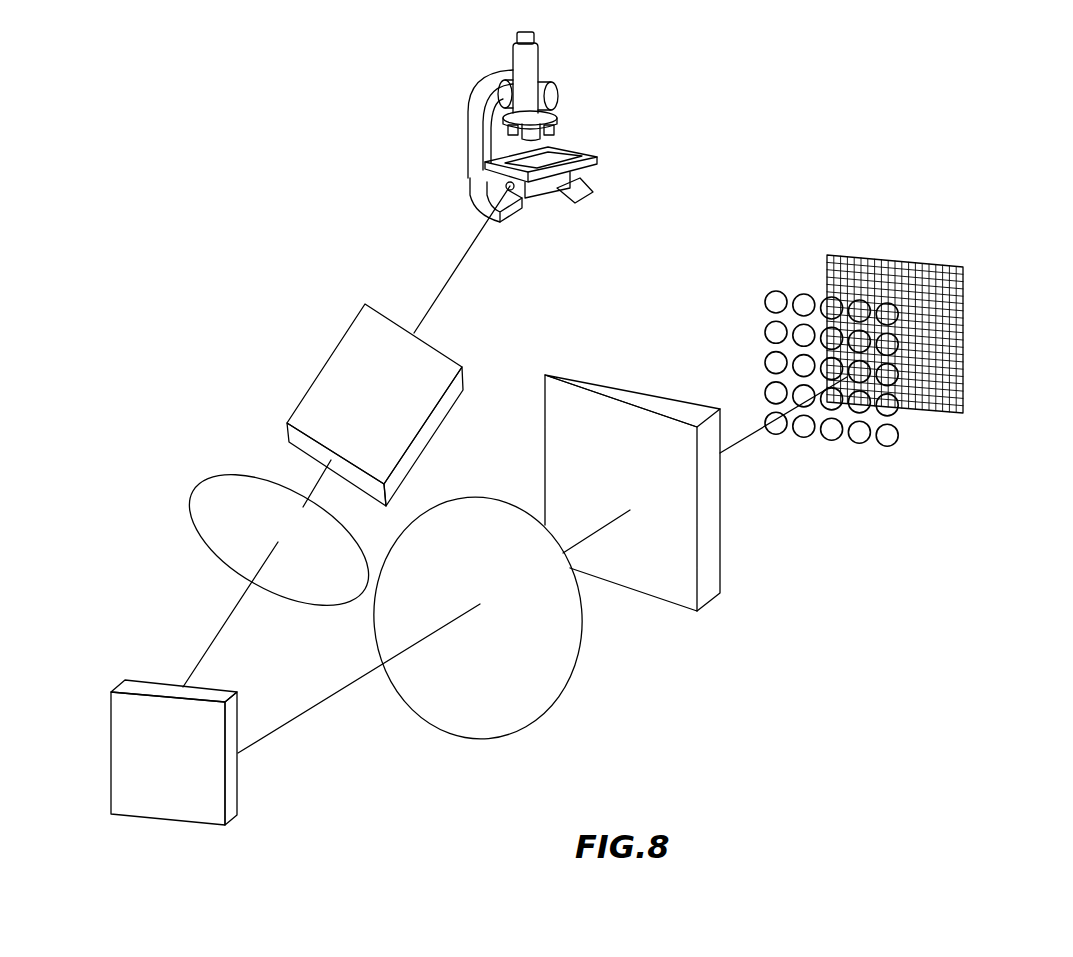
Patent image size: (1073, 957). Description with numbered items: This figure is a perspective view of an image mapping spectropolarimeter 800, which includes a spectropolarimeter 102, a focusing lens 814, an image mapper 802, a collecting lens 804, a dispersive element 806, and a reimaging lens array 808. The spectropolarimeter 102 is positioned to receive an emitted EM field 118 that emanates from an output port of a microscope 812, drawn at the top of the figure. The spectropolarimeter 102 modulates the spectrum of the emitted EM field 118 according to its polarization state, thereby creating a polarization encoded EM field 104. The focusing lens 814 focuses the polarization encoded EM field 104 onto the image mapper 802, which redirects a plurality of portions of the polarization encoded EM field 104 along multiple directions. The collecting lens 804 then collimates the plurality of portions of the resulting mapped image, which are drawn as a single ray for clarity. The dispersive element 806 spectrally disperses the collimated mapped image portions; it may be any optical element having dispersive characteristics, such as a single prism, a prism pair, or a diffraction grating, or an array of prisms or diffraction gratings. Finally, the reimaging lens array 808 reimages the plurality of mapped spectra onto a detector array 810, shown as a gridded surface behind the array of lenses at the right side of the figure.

The image mapping spectropolarimeter 800 is at (120, 132).
The microscope 812 is at (458, 105).
The emitted EM field 118 is at (415, 333).
The spectropolarimeter 102 is at (320, 366).
The polarization encoded EM field 104 is at (220, 625).
The focusing lens 814 is at (205, 527).
The image mapper 802 is at (150, 820).
The collecting lens 804 is at (483, 738).
The dispersive element 806 is at (717, 602).
The reimaging lens array 808 is at (892, 445).
The detector array 810 is at (960, 414).